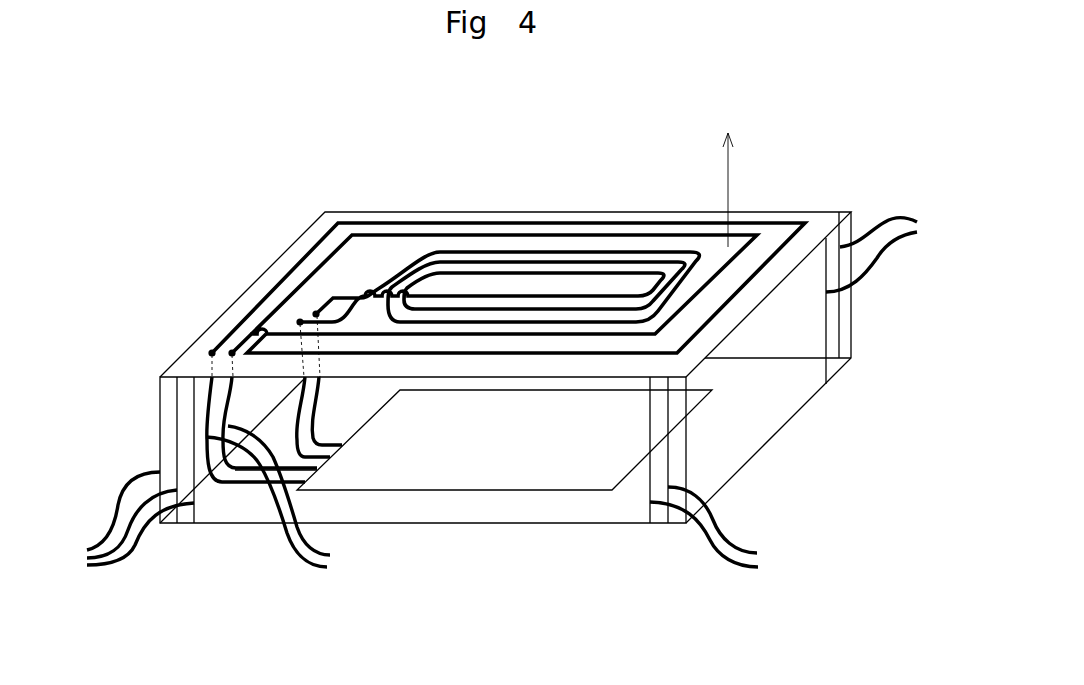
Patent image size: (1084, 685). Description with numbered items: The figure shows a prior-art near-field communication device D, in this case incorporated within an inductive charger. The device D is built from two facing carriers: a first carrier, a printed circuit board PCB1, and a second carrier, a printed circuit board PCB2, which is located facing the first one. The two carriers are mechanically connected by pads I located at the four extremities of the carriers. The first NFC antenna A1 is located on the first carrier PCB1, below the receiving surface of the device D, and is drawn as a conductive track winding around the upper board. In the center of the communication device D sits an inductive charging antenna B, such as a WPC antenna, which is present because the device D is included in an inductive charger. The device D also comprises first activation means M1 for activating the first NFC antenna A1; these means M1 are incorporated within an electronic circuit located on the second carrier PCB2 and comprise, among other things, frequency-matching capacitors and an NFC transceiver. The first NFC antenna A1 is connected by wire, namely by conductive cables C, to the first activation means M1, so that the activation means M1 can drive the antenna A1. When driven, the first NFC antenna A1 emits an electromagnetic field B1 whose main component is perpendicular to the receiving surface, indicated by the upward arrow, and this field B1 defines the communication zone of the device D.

The first NFC antenna A1 is at (433, 217).
The inductive charging antenna B is at (593, 270).
The electromagnetic field B1 is at (751, 186).
The printed circuit board PCB1 is at (832, 210).
The printed circuit board PCB2 is at (768, 441).
The communication device D is at (803, 112).
The first activation means M1 is at (500, 490).
The conductive cables C is at (281, 467).
The pads I is at (498, 391).